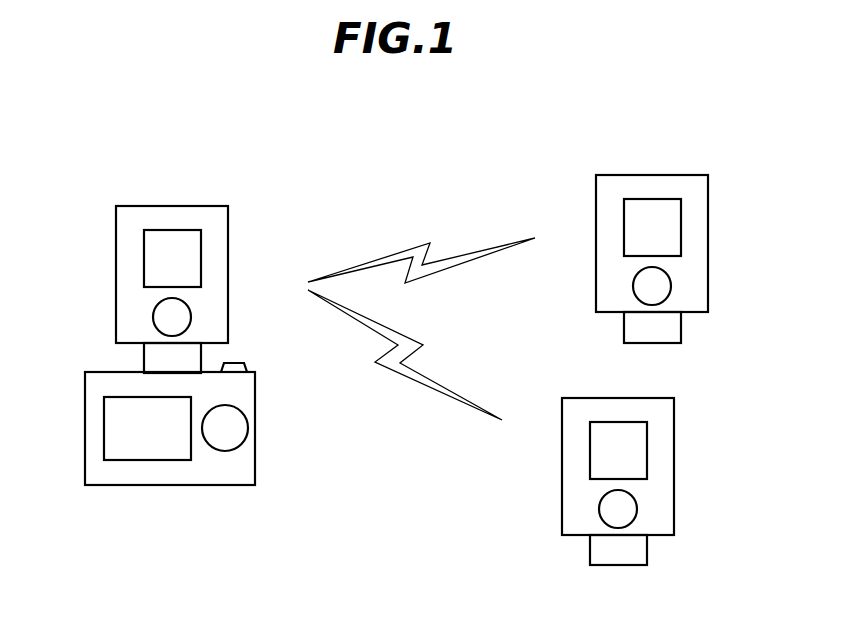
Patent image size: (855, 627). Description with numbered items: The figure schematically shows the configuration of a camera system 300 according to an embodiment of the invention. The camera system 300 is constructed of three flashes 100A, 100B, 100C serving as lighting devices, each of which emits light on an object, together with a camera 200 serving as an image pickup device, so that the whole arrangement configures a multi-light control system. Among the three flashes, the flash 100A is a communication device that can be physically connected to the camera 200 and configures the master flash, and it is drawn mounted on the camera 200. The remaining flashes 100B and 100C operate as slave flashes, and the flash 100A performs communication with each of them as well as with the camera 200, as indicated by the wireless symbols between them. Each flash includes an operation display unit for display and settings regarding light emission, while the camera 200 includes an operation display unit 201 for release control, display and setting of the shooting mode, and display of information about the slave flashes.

The camera system 300 is at (196, 129).
The flash 100A is at (228, 224).
The flash 100B is at (658, 259).
The flash 100C is at (625, 481).
The camera 200 is at (85, 432).
The operation display unit 201 is at (191, 402).